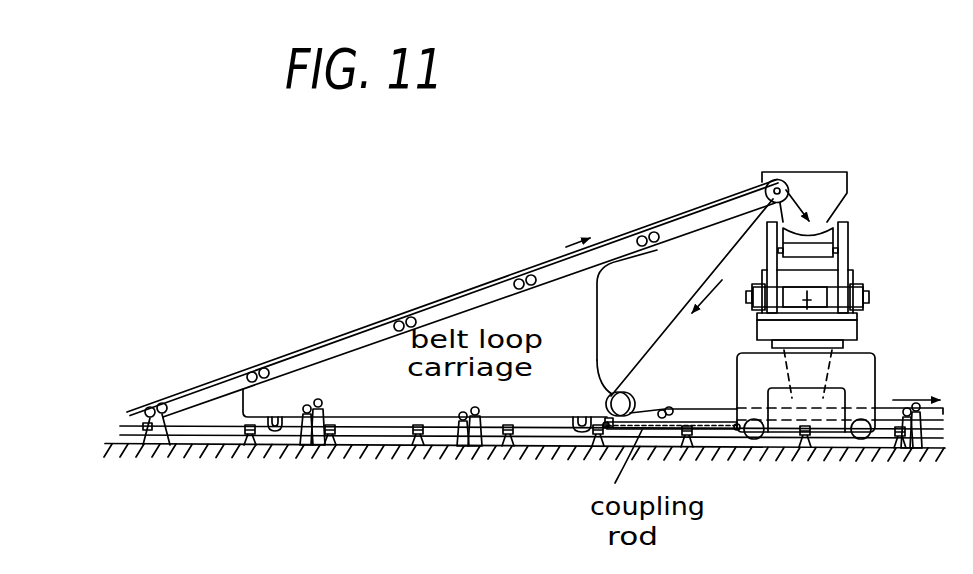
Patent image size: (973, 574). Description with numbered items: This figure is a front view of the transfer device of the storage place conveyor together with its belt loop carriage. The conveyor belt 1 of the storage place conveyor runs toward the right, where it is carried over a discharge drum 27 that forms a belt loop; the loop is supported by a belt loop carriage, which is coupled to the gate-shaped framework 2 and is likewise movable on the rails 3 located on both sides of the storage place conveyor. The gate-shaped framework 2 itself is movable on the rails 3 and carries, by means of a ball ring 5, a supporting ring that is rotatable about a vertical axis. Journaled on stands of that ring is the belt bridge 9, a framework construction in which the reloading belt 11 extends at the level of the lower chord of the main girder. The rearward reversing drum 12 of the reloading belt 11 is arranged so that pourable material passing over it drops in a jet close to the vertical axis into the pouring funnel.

The conveyor belt 1 is at (472, 289).
The gate-shaped framework 2 is at (867, 367).
The rails 3 is at (730, 441).
The ball ring 5 is at (833, 342).
The belt bridge 9 is at (846, 237).
The reloading belt 11 is at (787, 285).
The rearward reversing drum 12 is at (818, 285).
The discharge drum 27 is at (785, 179).